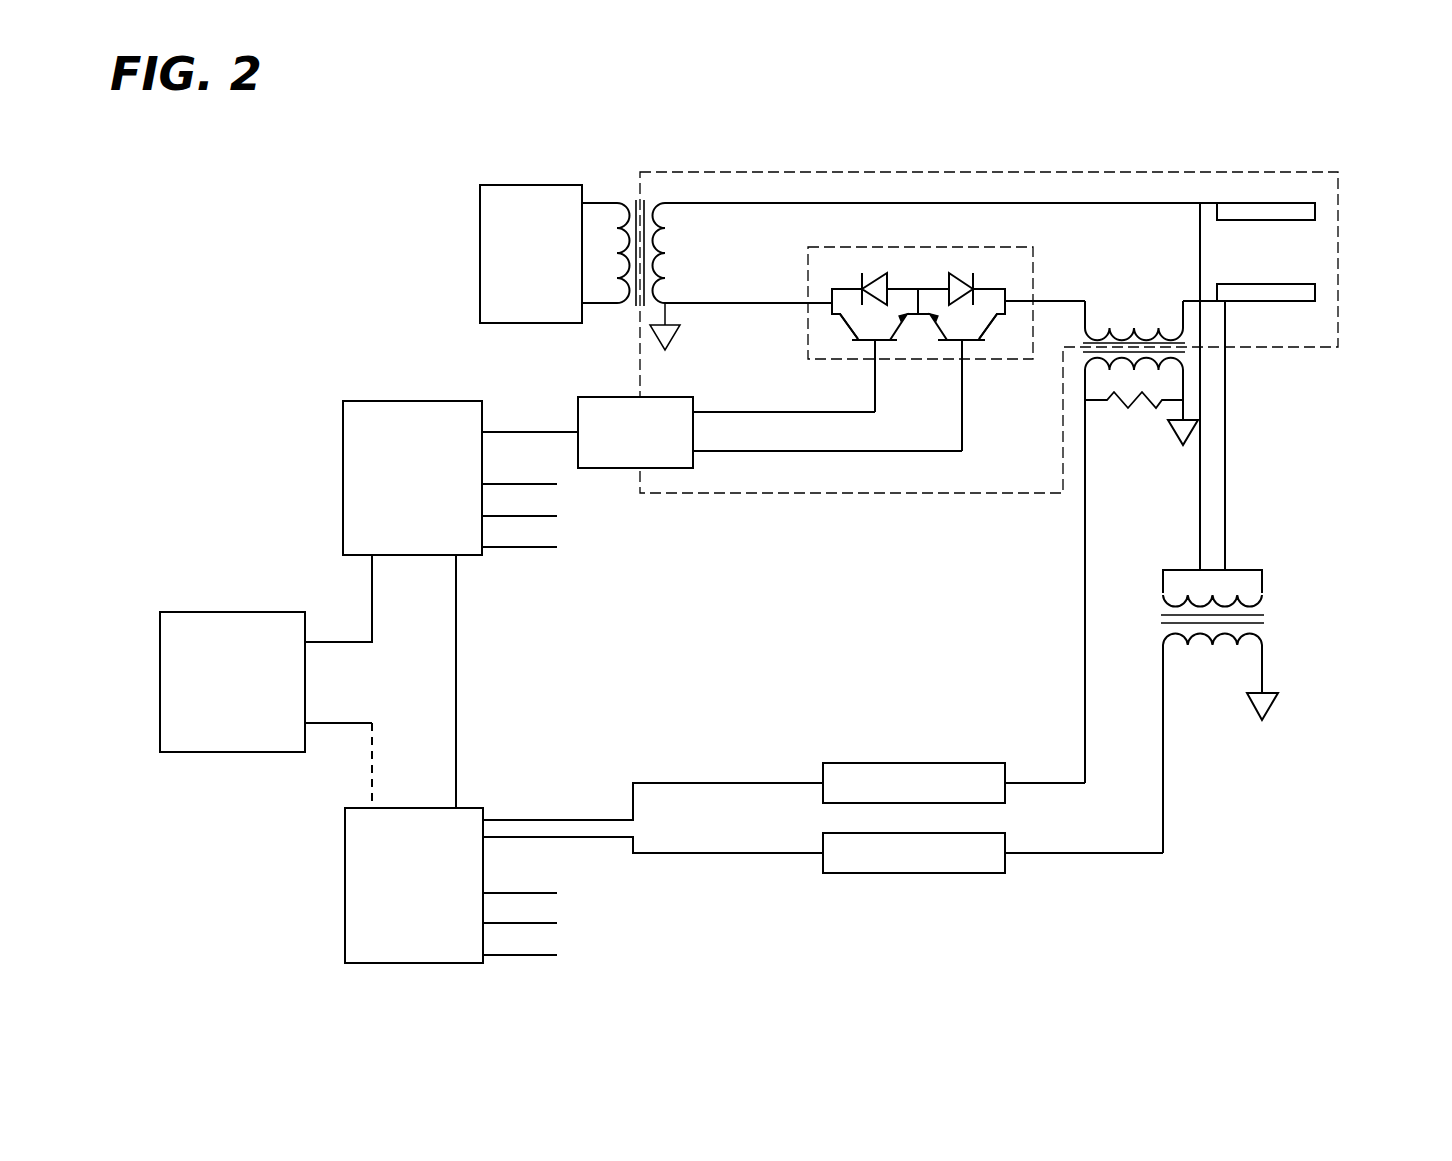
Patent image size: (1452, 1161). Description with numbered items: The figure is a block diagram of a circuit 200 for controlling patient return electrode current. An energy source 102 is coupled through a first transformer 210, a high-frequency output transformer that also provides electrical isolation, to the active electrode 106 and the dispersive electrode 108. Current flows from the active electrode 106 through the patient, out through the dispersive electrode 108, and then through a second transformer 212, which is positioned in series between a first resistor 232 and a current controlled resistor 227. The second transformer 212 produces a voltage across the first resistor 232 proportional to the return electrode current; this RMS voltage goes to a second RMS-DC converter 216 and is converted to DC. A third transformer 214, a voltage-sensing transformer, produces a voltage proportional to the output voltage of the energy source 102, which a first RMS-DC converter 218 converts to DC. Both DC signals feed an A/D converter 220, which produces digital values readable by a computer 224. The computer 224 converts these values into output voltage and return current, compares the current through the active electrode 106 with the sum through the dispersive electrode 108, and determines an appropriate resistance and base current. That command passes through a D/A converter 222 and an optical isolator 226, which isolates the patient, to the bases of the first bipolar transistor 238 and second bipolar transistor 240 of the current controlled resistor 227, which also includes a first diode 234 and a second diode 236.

The energy source 102 is at (478, 300).
The active electrode 106 is at (1320, 217).
The dispersive electrode 108 is at (1320, 290).
The circuit 200 is at (728, 155).
The first transformer 210 is at (632, 185).
The second transformer 212 is at (1197, 353).
The third transformer 214 is at (1282, 620).
The second RMS-DC converter 216 is at (955, 762).
The first RMS-DC converter 218 is at (971, 875).
The A/D converter 220 is at (345, 870).
The D/A converter 222 is at (340, 500).
The computer 224 is at (158, 638).
The isolator 226 is at (607, 392).
The current controlled resistor 227 is at (1055, 267).
The first resistor 232 is at (1192, 388).
The first diode 234 is at (838, 277).
The second diode 236 is at (988, 277).
The first bipolar transistor 238 is at (903, 343).
The second bipolar transistor 240 is at (993, 343).